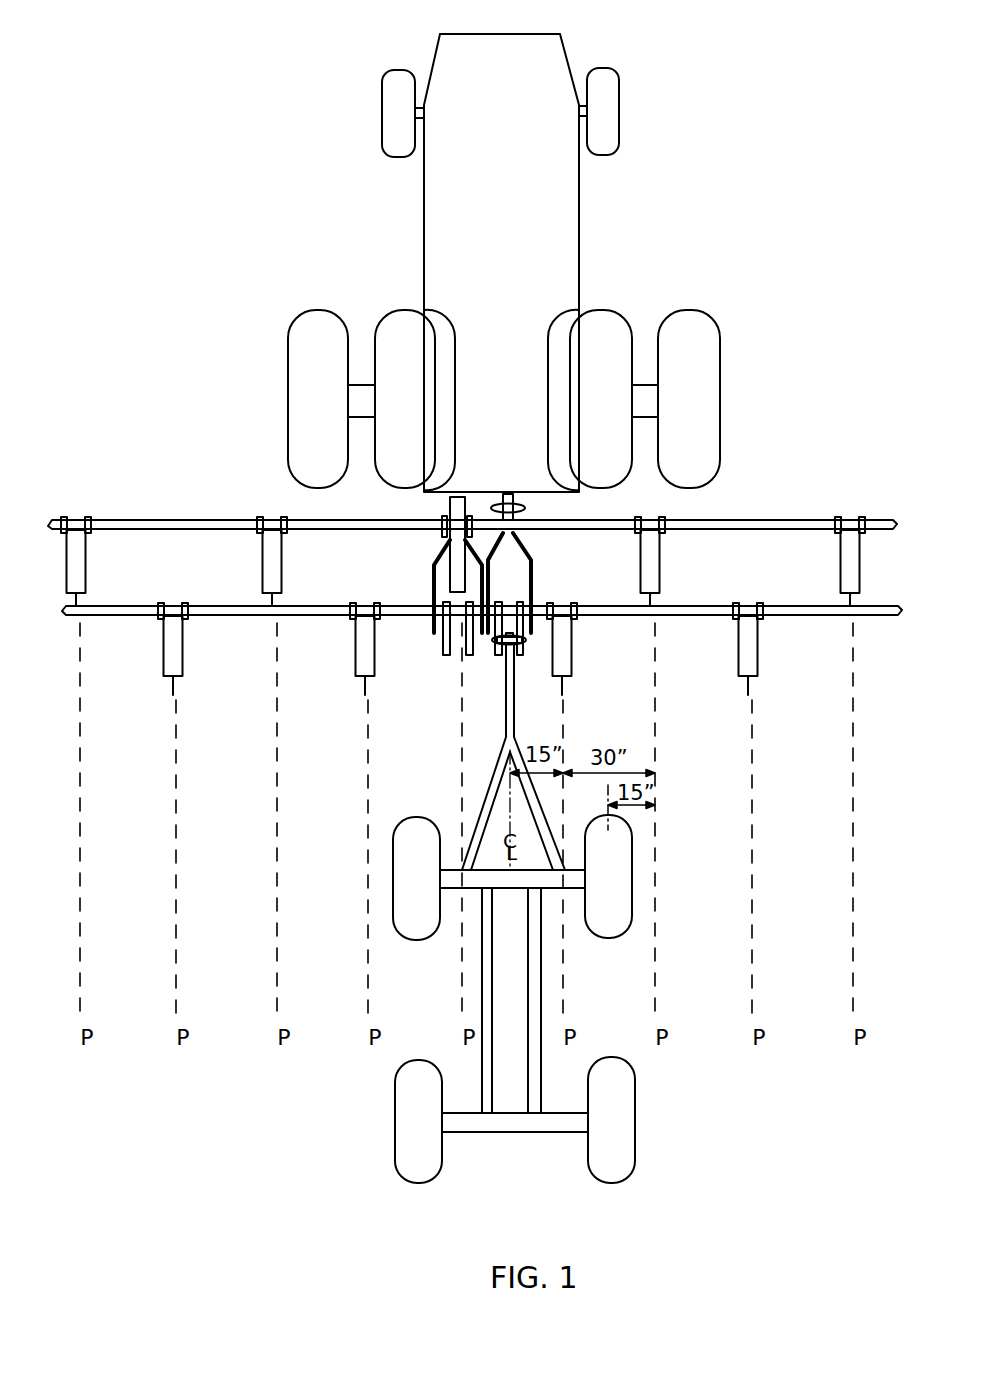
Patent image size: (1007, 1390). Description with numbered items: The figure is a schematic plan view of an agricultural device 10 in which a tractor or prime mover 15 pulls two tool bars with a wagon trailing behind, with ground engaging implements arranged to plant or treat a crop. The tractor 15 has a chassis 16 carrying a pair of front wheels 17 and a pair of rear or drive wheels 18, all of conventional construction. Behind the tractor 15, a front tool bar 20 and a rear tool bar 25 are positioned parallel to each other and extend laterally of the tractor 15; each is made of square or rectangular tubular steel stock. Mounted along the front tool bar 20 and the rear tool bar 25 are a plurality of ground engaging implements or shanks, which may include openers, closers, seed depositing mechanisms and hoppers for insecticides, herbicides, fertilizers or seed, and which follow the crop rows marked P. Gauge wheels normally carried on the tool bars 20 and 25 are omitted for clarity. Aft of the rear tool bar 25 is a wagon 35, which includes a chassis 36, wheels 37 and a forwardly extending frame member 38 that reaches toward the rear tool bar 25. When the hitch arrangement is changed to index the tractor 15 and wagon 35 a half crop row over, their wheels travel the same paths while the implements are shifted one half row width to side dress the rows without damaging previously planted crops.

The agricultural device 10 is at (832, 191).
The tractor or prime mover 15 is at (581, 207).
The chassis 16 is at (558, 42).
The front wheels 17 is at (613, 118).
The rear or drive wheels 18 is at (391, 322).
The front tool bar 20 is at (878, 521).
The rear tool bar 25 is at (872, 607).
The wagon 35 is at (474, 1136).
The chassis 36 is at (538, 1093).
The wheels 37 is at (415, 927).
The forwardly extending frame member 38 is at (505, 750).